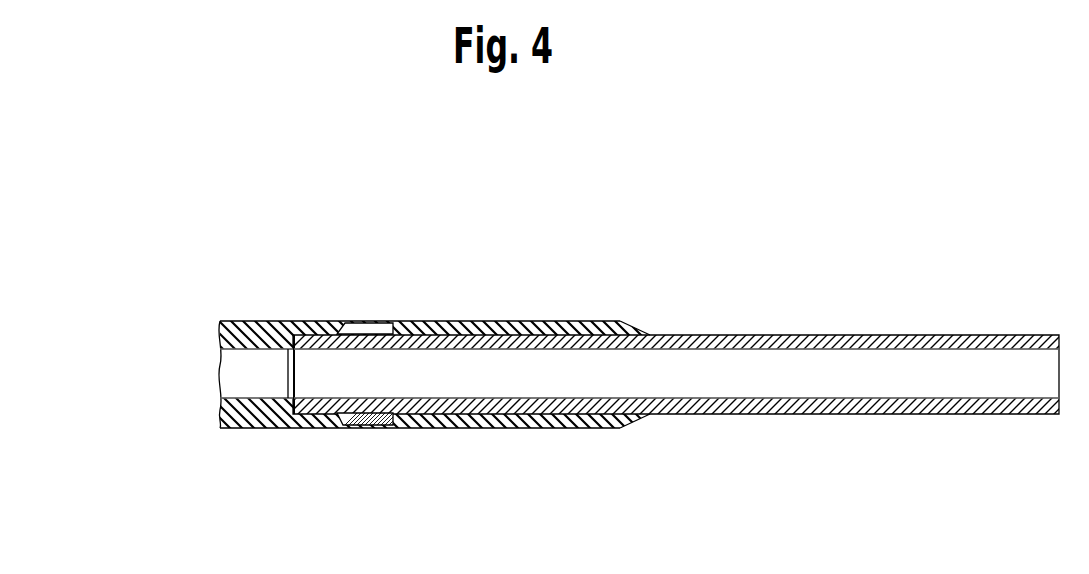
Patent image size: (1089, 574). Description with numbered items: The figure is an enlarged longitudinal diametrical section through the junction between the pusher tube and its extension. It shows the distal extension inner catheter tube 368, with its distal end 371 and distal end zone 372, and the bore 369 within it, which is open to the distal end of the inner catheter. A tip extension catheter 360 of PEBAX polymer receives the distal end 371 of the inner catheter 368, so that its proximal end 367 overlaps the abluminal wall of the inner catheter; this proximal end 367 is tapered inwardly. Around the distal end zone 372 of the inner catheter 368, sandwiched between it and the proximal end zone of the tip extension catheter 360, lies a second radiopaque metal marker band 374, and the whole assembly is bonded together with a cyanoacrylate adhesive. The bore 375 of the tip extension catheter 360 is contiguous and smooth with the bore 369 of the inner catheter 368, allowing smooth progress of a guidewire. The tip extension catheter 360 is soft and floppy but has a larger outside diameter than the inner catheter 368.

The tip extension catheter 360 is at (576, 431).
The proximal end of tip extension catheter 367 is at (615, 322).
The inner catheter tube 368 is at (823, 419).
The bore of inner catheter 369 is at (868, 367).
The distal end of inner catheter 371 is at (562, 326).
The distal end zone of inner catheter 372 is at (304, 413).
The second radiopaque metal marker band 374 is at (357, 321).
The bore of tip extension catheter 375 is at (250, 378).